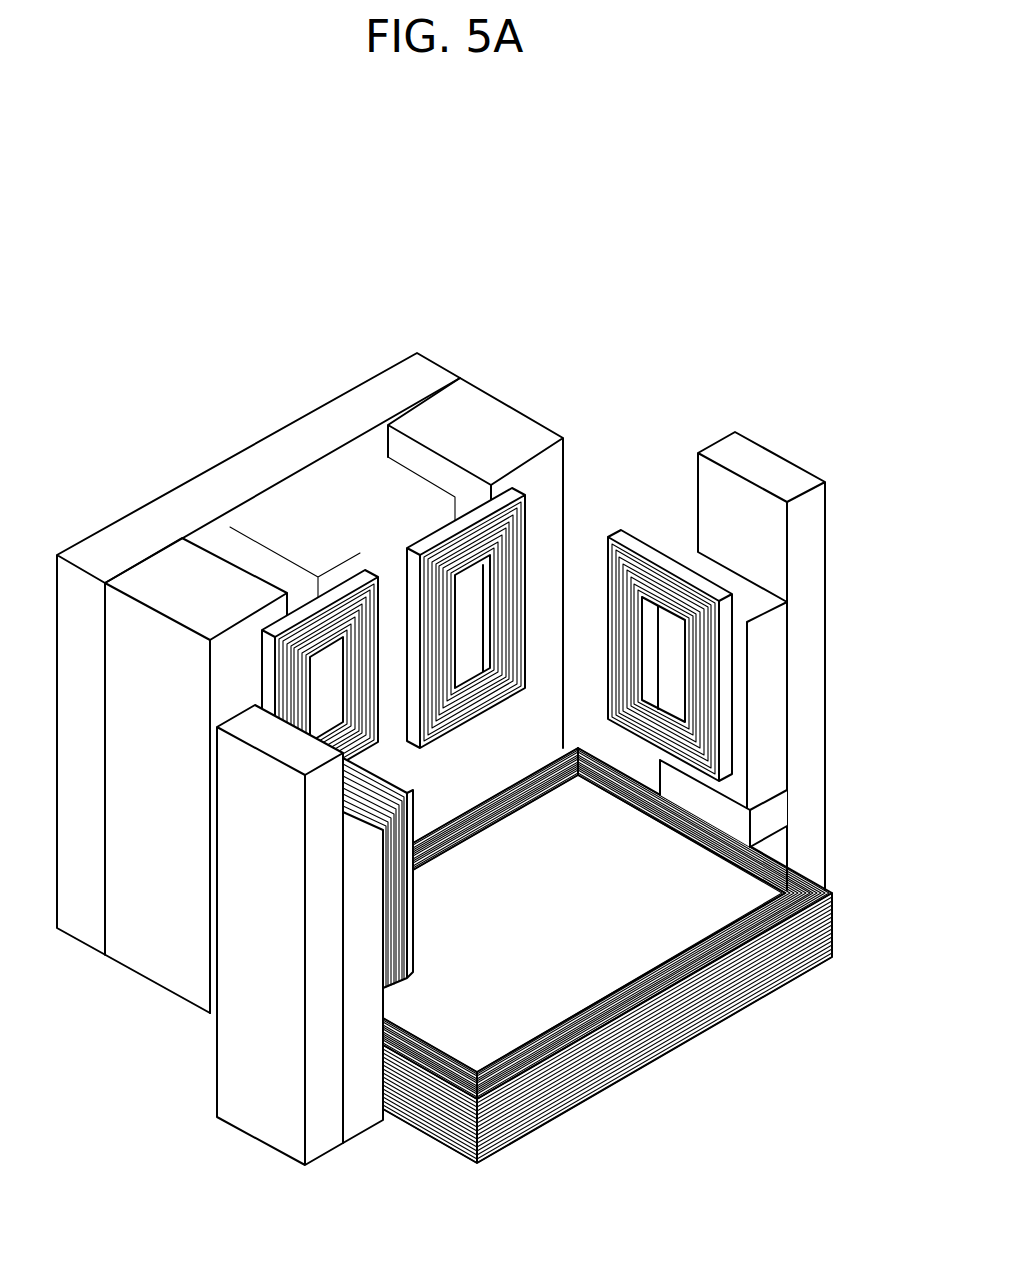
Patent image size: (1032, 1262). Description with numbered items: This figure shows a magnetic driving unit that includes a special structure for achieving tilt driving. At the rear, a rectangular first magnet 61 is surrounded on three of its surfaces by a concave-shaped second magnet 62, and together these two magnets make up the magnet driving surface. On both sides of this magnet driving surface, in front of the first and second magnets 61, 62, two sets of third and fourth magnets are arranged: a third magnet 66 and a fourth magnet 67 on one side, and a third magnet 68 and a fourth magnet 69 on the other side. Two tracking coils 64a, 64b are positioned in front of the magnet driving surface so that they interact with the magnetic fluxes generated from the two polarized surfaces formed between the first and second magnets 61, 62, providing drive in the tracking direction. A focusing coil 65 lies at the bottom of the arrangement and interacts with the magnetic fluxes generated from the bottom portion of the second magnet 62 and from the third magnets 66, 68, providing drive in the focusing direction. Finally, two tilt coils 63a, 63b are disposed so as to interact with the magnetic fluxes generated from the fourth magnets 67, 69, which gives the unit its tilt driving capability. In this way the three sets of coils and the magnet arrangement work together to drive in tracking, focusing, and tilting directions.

The first magnet 61 is at (303, 503).
The second magnet 62 is at (170, 580).
The tilt coil 63a is at (415, 932).
The tilt coil 63b is at (637, 540).
The tracking coil 64a is at (305, 612).
The tracking coil 64b is at (440, 532).
The focusing coil 65 is at (655, 1024).
The third magnet 66 is at (777, 819).
The fourth magnet 67 is at (777, 673).
The third magnet 68 is at (360, 1093).
The fourth magnet 69 is at (360, 910).